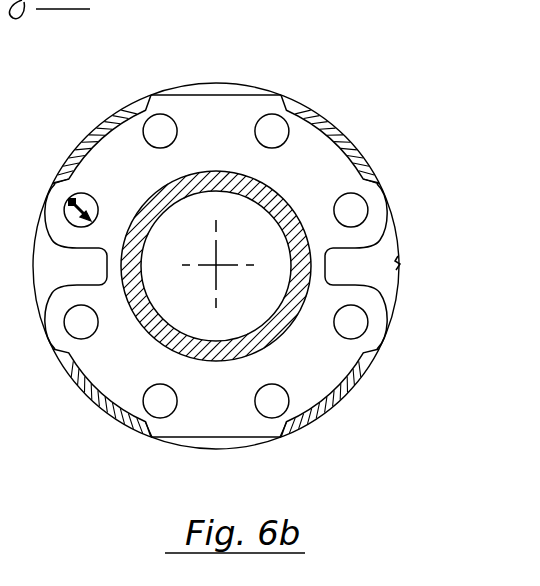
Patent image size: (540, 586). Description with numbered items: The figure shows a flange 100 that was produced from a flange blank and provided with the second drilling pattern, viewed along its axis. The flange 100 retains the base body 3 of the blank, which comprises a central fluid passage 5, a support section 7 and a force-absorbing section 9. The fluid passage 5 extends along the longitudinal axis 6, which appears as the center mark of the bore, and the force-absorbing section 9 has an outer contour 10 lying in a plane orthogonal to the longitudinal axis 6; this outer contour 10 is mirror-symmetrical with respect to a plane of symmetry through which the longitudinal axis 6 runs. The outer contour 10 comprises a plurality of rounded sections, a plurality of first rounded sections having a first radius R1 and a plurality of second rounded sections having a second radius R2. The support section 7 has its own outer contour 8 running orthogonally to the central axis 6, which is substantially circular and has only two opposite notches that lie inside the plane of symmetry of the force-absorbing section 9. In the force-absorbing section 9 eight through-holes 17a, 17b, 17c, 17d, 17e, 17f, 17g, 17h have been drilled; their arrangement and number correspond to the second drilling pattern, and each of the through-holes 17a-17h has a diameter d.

The flange 100 is at (354, 79).
The first radius R1 is at (290, 99).
The second radius R2 is at (348, 136).
The force-absorbing section 9 is at (207, 112).
The diameter d is at (93, 195).
The base body 3 is at (348, 390).
The outer contour 10 is at (33, 267).
The support section 7 is at (390, 275).
The outer contour 8 is at (396, 264).
The fluid passage 5 is at (200, 316).
The longitudinal axis 6 is at (232, 251).
The through-hole 17a is at (157, 114).
The through-hole 17b is at (96, 199).
The through-hole 17c is at (76, 336).
The through-hole 17d is at (143, 413).
The through-hole 17e is at (270, 420).
The through-hole 17f is at (333, 318).
The through-hole 17g is at (362, 200).
The through-hole 17h is at (268, 147).